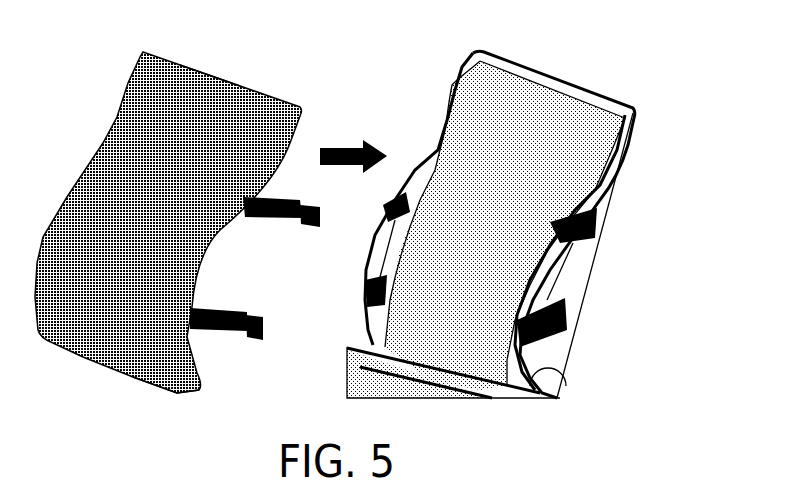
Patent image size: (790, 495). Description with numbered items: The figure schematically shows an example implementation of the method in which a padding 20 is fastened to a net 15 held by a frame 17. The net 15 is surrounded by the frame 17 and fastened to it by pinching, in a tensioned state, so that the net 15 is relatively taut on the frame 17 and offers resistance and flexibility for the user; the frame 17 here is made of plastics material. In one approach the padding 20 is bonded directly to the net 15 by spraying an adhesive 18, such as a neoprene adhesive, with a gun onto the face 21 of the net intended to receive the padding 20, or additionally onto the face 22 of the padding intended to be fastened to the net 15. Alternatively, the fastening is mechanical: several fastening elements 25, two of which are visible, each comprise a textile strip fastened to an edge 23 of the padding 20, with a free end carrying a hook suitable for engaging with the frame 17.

The net 15 is at (473, 122).
The frame 17 is at (540, 75).
The adhesive 18 is at (500, 185).
The padding 20 is at (157, 187).
The face of the net 21 is at (510, 242).
The face of the padding 22 is at (215, 100).
The edge of the padding 23 is at (200, 372).
The fastening element 25 is at (262, 268).